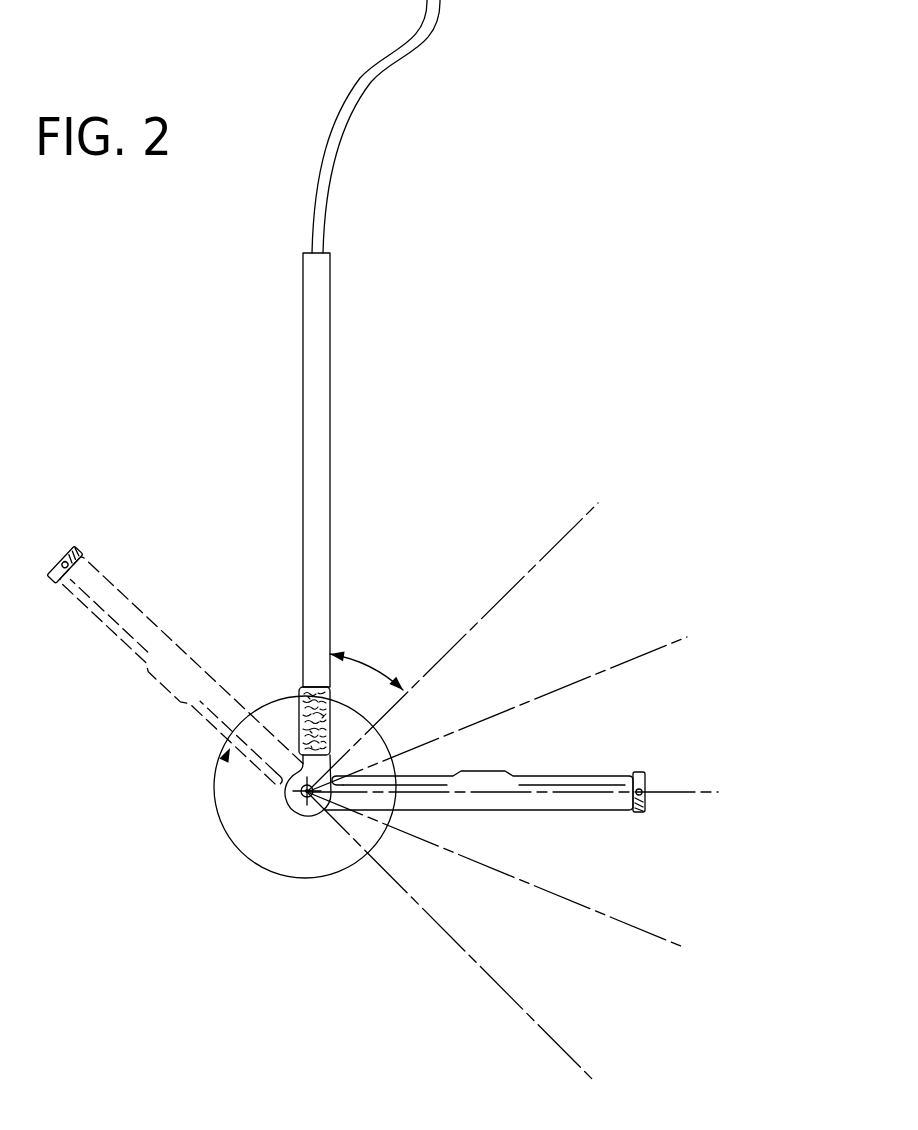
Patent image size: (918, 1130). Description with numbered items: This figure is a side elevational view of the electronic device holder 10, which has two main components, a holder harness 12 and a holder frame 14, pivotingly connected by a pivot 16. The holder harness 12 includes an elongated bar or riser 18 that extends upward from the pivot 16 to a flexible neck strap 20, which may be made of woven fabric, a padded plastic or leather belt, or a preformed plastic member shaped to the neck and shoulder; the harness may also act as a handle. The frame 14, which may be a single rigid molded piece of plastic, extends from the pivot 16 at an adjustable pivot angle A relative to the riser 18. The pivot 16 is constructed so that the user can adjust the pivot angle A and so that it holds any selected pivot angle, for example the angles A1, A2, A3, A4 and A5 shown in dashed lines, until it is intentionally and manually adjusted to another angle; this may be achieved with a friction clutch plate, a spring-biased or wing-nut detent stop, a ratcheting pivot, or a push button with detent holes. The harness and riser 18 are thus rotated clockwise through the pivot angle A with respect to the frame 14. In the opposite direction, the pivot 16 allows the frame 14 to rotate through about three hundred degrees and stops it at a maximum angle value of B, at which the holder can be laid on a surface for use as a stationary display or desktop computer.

The electronic device holder 10 is at (450, 200).
The holder harness 12 is at (288, 247).
The holder frame 14 is at (592, 748).
The pivot 16 is at (303, 793).
The riser 18 is at (312, 430).
The neck strap 20 is at (340, 118).
The pivot angle A is at (366, 668).
The pivot angle A1 is at (468, 636).
The pivot angle A2 is at (514, 707).
The pivot angle A3 is at (530, 792).
The pivot angle A4 is at (512, 882).
The pivot angle A5 is at (467, 946).
The maximum angle value B is at (270, 873).